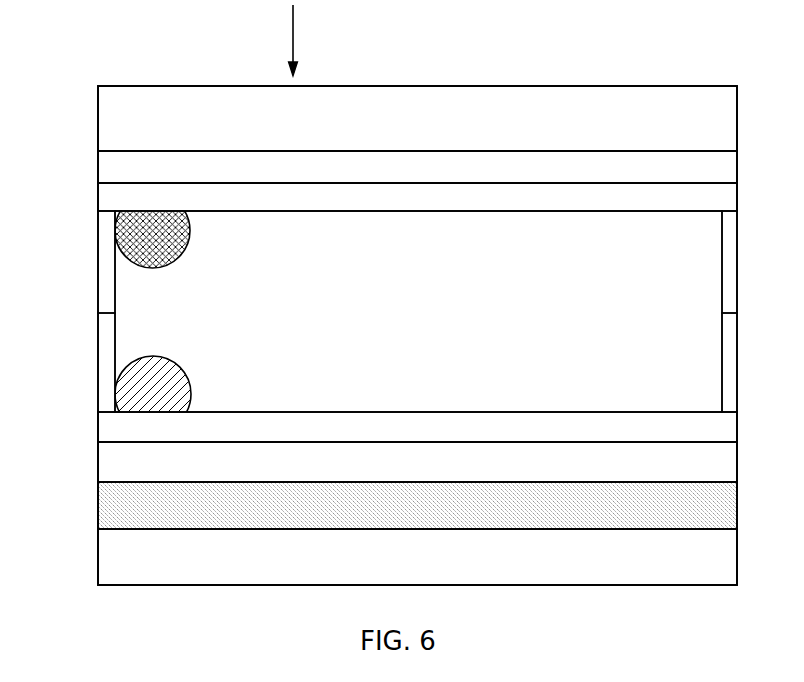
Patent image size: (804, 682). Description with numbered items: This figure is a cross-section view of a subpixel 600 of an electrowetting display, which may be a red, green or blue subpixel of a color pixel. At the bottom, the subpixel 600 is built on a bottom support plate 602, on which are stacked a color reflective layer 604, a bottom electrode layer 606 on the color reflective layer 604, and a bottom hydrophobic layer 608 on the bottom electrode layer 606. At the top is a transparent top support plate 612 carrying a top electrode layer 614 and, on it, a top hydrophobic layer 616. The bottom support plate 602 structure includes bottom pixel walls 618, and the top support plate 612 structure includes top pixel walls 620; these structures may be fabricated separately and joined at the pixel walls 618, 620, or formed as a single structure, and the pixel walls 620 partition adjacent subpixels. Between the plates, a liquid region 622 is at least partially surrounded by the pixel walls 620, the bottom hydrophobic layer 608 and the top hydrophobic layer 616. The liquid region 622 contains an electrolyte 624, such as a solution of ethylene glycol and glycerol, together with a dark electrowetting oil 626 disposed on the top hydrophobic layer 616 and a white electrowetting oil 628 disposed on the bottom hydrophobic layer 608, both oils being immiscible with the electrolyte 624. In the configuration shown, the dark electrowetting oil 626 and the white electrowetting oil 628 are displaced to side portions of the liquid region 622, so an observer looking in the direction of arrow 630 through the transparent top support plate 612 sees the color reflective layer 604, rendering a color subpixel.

The subpixel 600 is at (637, 51).
The bottom support plate 602 is at (435, 566).
The color reflective layer 604 is at (98, 508).
The bottom electrode layer 606 is at (98, 450).
The bottom hydrophobic layer 608 is at (98, 428).
The transparent top support plate 612 is at (435, 121).
The top electrode layer 614 is at (98, 168).
The top hydrophobic layer 616 is at (98, 193).
The bottom pixel walls 618 is at (98, 331).
The top pixel walls 620 is at (98, 240).
The liquid region 622 is at (435, 309).
The electrolyte 624 is at (539, 366).
The dark electrowetting oil 626 is at (185, 249).
The white electrowetting oil 628 is at (186, 375).
The arrow 630 is at (293, 23).